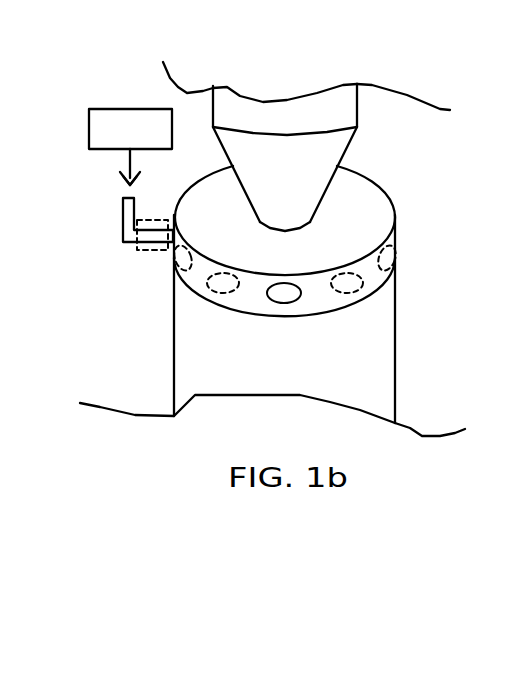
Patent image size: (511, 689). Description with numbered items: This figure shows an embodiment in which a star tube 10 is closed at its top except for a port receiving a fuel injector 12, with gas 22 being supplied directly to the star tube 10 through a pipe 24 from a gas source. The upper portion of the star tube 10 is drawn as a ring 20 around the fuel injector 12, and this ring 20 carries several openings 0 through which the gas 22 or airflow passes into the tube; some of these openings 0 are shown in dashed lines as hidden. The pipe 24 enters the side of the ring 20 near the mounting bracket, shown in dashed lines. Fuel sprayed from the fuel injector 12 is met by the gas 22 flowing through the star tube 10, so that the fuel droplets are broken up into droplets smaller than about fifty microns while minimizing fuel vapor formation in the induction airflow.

The star tube 10 is at (136, 356).
The fuel injector 12 is at (303, 128).
The gas distribution ring 20 is at (396, 226).
The gas outlet holes 0 is at (199, 296).
The gas 22 is at (125, 109).
The gas inlet pipe 24 is at (148, 250).